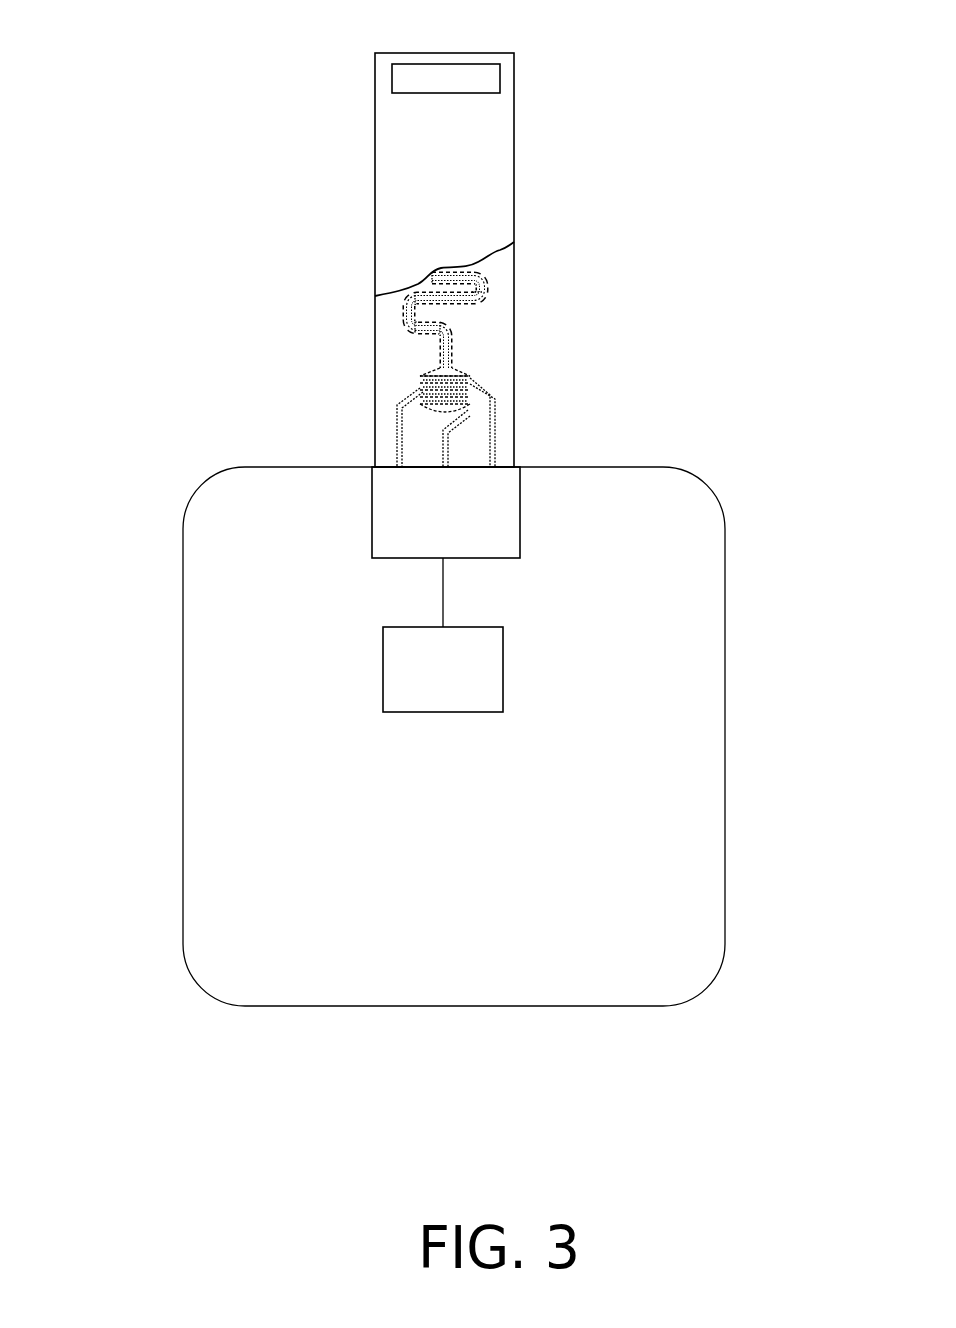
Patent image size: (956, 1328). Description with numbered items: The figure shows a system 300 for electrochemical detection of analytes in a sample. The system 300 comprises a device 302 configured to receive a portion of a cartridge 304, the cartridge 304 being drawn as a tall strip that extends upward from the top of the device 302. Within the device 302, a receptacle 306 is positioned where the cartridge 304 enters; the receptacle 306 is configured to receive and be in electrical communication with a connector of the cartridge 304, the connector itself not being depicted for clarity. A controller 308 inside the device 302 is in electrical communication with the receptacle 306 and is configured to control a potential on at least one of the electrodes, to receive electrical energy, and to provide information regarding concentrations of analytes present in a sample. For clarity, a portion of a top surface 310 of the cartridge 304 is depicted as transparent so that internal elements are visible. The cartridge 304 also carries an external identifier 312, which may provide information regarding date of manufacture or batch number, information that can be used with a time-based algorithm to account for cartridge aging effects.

The sensor system 300 is at (148, 60).
The device 302 is at (183, 790).
The cartridge 304 is at (445, 249).
The receptacle 306 is at (372, 507).
The controller 308 is at (503, 667).
The top surface 310 is at (468, 159).
The external identifier 312 is at (418, 73).